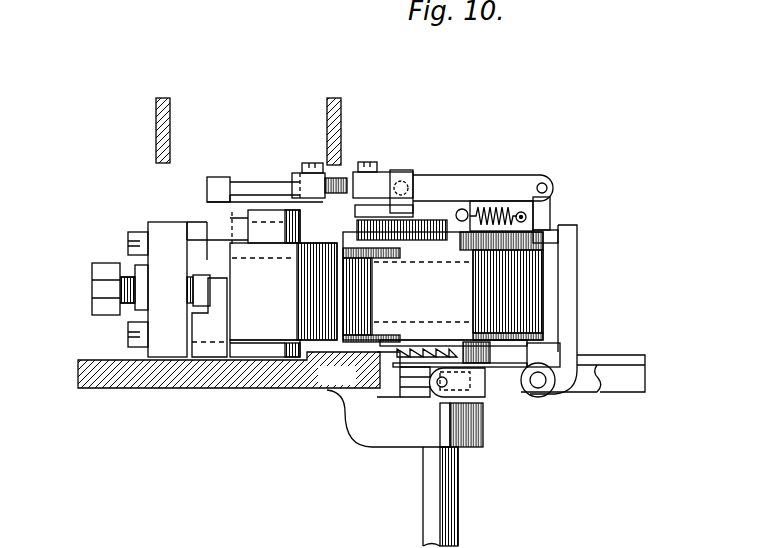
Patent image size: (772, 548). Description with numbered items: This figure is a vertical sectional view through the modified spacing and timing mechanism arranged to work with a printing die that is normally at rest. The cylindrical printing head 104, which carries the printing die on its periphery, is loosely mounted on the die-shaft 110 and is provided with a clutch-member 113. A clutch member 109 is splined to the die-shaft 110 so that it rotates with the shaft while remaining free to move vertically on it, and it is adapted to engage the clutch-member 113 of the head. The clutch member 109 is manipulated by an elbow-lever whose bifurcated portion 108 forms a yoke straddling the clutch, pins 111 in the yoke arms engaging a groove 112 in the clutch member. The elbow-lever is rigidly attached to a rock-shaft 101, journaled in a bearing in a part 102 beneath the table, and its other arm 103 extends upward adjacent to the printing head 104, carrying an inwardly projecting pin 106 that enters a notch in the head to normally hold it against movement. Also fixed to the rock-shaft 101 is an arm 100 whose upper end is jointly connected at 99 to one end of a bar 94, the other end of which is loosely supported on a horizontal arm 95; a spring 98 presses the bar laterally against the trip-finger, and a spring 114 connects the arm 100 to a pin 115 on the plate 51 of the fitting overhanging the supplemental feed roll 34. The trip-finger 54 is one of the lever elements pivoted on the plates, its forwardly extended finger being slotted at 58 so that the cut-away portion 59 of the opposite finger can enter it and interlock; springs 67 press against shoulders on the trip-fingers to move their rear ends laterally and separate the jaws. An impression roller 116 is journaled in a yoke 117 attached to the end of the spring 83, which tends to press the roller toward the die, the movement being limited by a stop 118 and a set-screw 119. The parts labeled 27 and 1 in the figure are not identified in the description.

The frame bar 1 is at (645, 356).
The plate 27 is at (156, 101).
The supplemental feed roll 34 is at (422, 225).
The flat horizontal plate 51 is at (472, 242).
The trip-finger 54 is at (303, 183).
The slot 58 is at (323, 178).
The cut-away portion 59 is at (320, 182).
The spring 67 is at (235, 180).
The spring 83 is at (148, 223).
The bar 94 is at (480, 190).
The horizontal arm 95 is at (415, 192).
The spring 98 is at (403, 172).
The joint connection 99 is at (548, 184).
The arm 100 is at (548, 213).
The rock-shaft 101 is at (538, 383).
The part beneath the table 102 is at (592, 390).
The arm of elbow-lever 103 is at (570, 280).
The cylindrical printing head 104 is at (443, 287).
The inwardly projecting pin 106 is at (548, 238).
The bifurcated portion of elbow-lever 108 is at (488, 387).
The clutch member 109 is at (229, 370).
The die-shaft 110 is at (467, 515).
The pin 111 is at (430, 398).
The groove 112 is at (395, 398).
The clutch-member 113 is at (430, 343).
The spring 114 is at (525, 212).
The pin 115 is at (505, 210).
The impression roller 116 is at (283, 283).
The yoke 117 is at (195, 220).
The stop 118 is at (232, 320).
The set-screw 119 is at (103, 295).